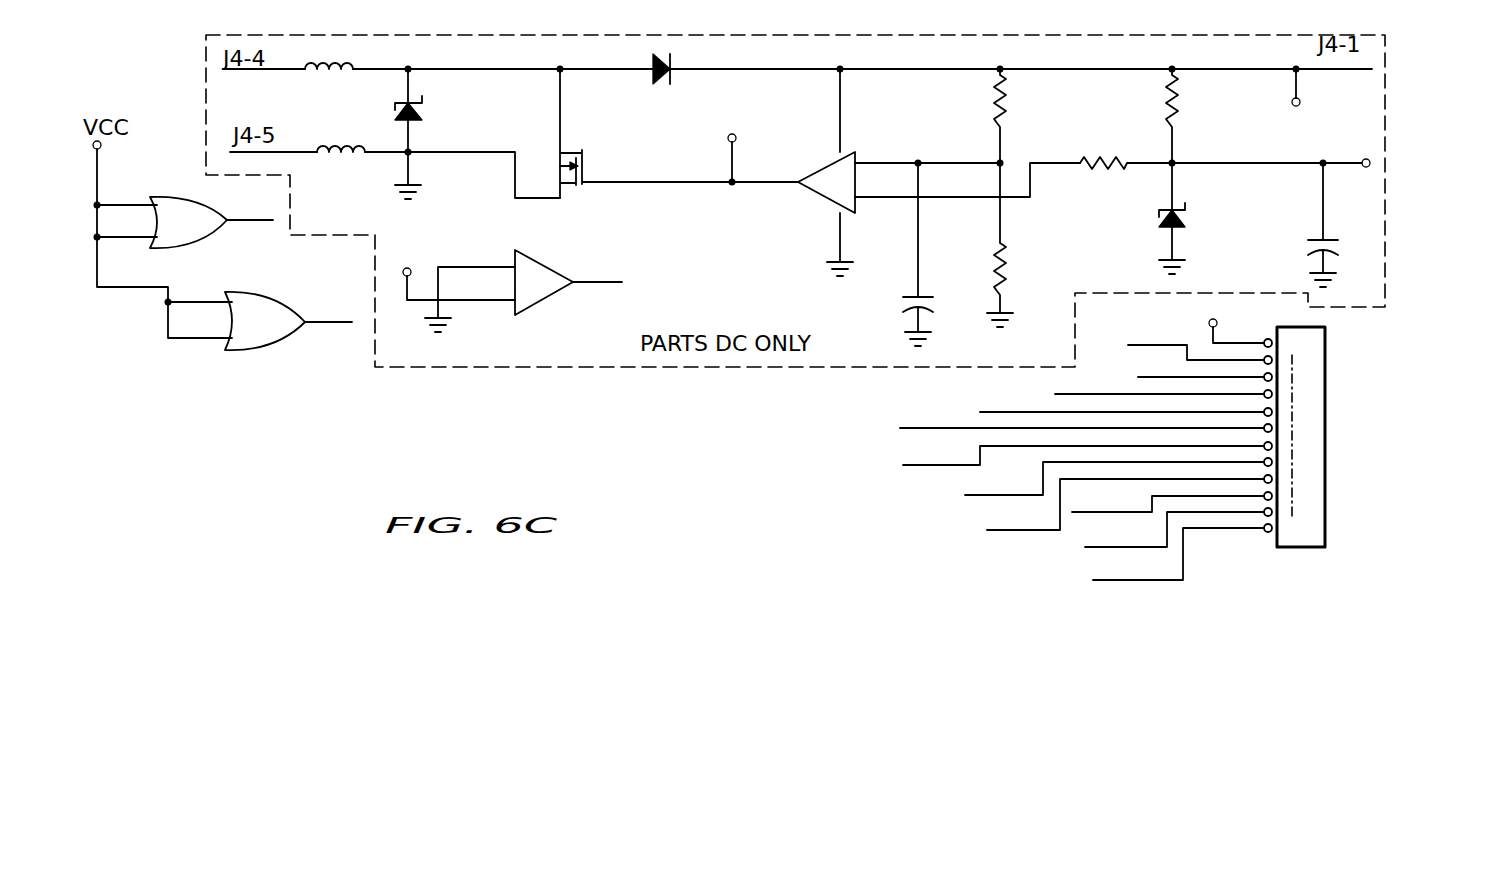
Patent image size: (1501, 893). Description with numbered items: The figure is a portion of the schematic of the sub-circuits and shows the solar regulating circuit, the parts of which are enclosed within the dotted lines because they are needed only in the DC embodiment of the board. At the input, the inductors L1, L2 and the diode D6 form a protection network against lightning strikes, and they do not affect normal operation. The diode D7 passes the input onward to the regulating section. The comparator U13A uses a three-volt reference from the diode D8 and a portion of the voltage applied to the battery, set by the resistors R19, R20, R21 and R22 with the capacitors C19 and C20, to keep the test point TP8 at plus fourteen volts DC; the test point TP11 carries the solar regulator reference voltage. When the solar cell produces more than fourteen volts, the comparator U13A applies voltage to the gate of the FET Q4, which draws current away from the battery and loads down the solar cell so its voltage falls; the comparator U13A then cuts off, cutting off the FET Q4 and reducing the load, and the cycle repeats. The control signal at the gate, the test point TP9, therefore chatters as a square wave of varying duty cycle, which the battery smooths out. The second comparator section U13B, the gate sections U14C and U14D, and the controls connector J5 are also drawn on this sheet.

The inductor L1 is at (331, 68).
The inductor L2 is at (348, 150).
The diode D6 is at (453, 134).
The diode D7 is at (674, 72).
The reference diode D8 is at (1216, 218).
The FET Q4 is at (679, 144).
The test point TP8 is at (1320, 93).
The test point TP9 is at (755, 153).
The test point TP11 is at (1342, 147).
The comparator U13A is at (907, 172).
The comparator section U13B is at (519, 282).
The gate U14C is at (193, 223).
The gate U14D is at (267, 322).
The resistor R19 is at (1035, 116).
The resistor R20 is at (1032, 245).
The resistor R21 is at (1204, 116).
The resistor R22 is at (1221, 166).
The capacitor C19 is at (880, 254).
The capacitor C20 is at (1283, 225).
The connector J5 is at (1174, 437).